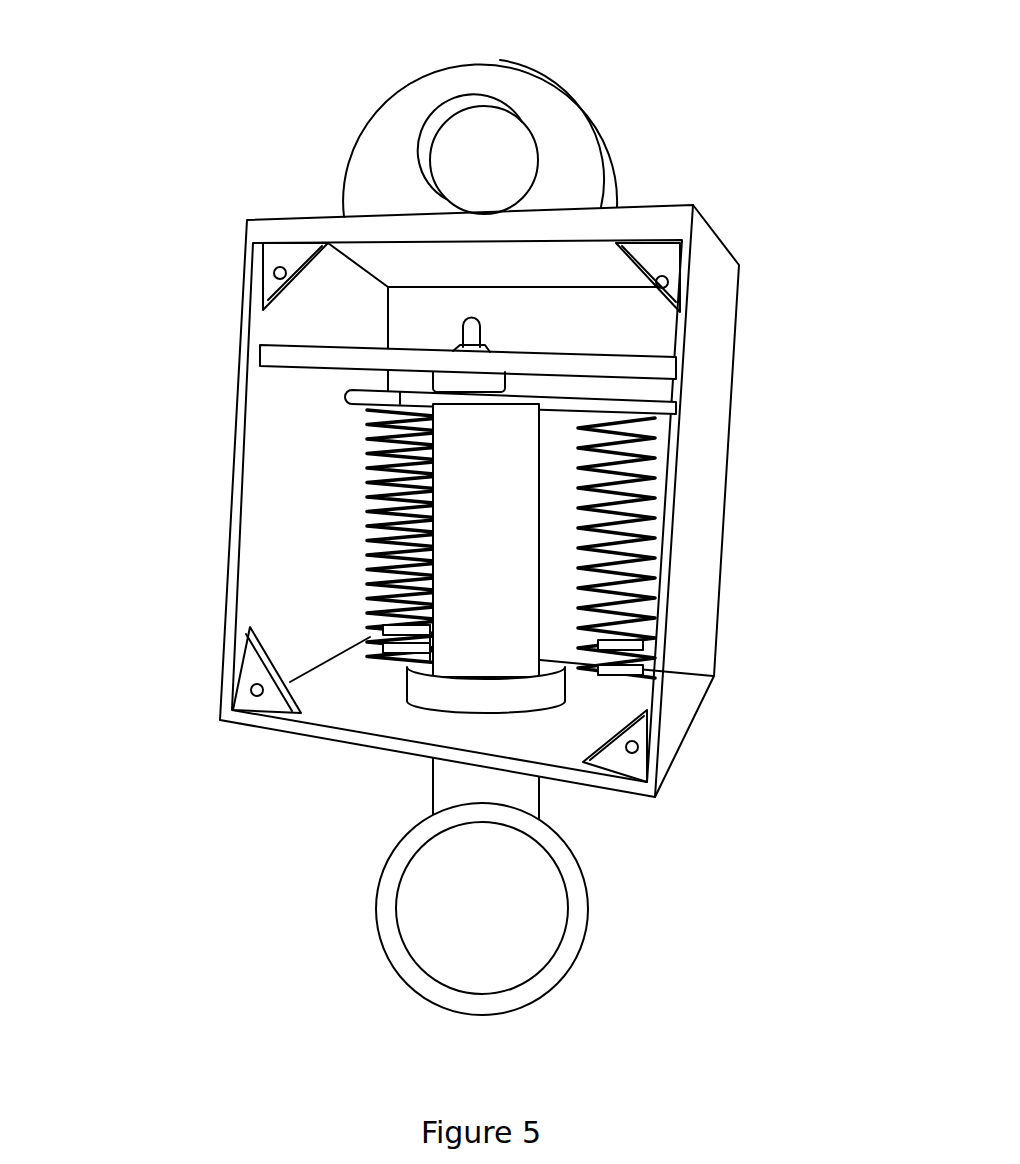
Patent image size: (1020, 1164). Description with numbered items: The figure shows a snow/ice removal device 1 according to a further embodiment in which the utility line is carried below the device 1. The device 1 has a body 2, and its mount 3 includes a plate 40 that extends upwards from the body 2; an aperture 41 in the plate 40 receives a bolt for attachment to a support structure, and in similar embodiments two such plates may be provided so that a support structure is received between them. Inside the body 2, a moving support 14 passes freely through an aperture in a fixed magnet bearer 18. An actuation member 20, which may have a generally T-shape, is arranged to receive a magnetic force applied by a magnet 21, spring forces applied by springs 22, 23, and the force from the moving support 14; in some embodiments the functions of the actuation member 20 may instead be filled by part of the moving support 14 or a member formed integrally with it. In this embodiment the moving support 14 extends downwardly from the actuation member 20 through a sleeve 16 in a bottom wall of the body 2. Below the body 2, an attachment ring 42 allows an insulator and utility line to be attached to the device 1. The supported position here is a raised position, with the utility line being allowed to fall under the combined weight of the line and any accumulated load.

The device 1 is at (126, 150).
The body 2 is at (710, 338).
The mount 3 is at (315, 150).
The moving support 14 is at (467, 572).
The sleeve 16 is at (507, 693).
The fixed magnet bearer 18 is at (266, 353).
The actuation member 20 is at (348, 398).
The magnet 21 is at (467, 378).
The spring 22 is at (370, 530).
The spring 23 is at (627, 578).
The plate 40 is at (412, 100).
The aperture 41 is at (487, 135).
The attachment ring 42 is at (572, 870).